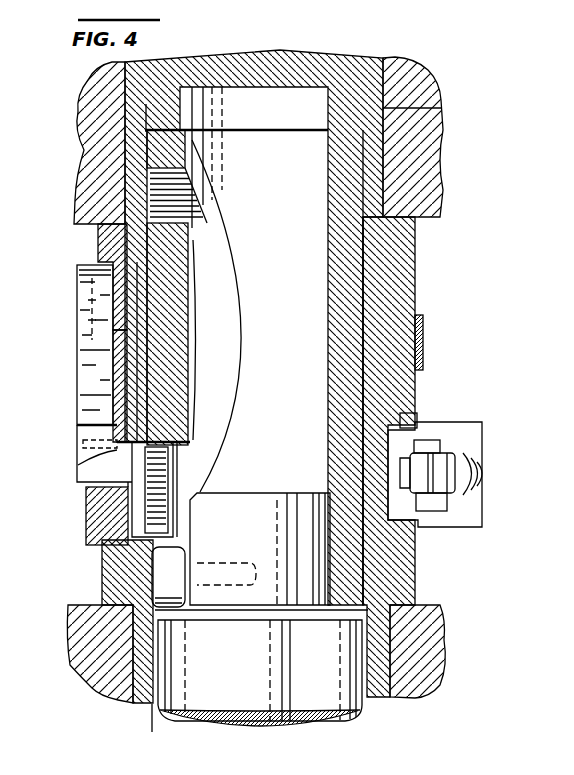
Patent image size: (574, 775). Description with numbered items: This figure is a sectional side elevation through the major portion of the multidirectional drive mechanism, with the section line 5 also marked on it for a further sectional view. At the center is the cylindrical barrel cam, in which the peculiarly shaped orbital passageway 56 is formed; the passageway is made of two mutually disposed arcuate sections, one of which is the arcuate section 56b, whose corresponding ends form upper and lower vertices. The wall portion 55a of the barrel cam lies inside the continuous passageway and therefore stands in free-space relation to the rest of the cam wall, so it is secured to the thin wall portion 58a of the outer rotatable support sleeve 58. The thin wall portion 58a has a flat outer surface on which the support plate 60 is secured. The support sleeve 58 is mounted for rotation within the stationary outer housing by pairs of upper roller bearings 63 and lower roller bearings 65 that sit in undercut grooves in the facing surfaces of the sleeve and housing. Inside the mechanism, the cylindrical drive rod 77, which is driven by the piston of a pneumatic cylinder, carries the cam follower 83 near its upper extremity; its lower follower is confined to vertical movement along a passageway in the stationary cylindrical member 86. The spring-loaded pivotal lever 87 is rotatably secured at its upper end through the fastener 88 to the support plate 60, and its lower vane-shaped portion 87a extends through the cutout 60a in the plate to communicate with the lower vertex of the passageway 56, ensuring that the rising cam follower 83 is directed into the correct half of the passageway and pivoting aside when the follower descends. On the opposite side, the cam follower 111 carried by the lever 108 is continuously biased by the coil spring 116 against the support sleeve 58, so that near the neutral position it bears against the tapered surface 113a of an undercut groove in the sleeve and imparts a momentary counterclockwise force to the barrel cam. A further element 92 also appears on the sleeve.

The section line 5- 5 is at (137, 120).
The upper roller bearings 63 is at (82, 179).
The outer rotatable support sleeve 58 is at (107, 240).
The thin wall portion 58a is at (140, 333).
The fastener 88 is at (92, 309).
The spring-loaded pivotal lever 87 is at (102, 361).
The support plate 60 is at (127, 400).
The cutout 60a is at (110, 480).
The lower roller bearings 65 is at (88, 656).
The wall portion of the barrel cam 55a is at (178, 363).
The orbital passageway 56 is at (216, 210).
The arcuate section 56b is at (215, 283).
The vane-shaped portion 87a is at (163, 461).
The cylindrical drive rod 77 is at (253, 507).
The cam follower 83 is at (173, 553).
The stationary cylindrical member 86 is at (345, 702).
The knurled ring 92 is at (421, 352).
The tapered surface 113a is at (400, 415).
The cam follower 111 is at (448, 453).
The lever 108 is at (467, 443).
The coil spring 116 is at (468, 505).